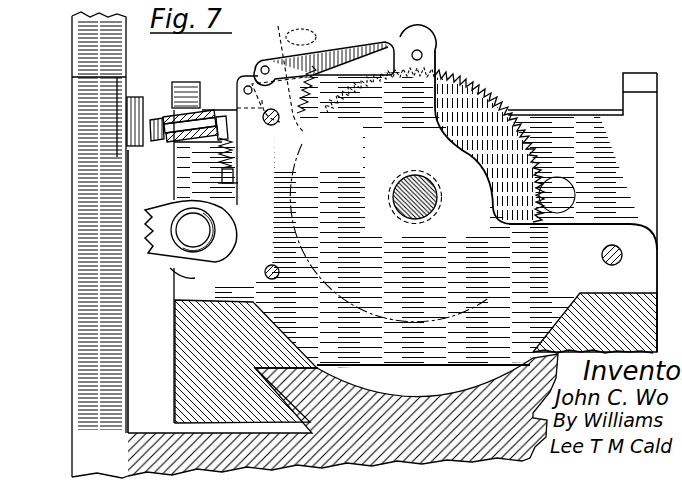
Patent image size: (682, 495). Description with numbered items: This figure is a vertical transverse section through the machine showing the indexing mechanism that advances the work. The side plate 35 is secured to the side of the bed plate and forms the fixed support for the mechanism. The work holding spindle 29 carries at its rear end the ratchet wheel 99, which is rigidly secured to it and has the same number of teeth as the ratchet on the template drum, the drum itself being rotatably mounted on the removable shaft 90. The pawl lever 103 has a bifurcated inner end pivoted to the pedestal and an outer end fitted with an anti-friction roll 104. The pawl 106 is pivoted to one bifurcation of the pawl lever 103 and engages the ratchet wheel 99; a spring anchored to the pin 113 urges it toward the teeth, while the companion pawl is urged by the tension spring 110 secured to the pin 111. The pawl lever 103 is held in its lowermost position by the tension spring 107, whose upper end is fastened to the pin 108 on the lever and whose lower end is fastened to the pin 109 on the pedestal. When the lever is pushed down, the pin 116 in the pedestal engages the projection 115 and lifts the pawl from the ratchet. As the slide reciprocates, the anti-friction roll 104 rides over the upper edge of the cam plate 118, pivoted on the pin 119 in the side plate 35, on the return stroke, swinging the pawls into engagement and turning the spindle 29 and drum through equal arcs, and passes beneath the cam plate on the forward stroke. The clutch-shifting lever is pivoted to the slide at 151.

The side plate 35 is at (80, 116).
The anti-friction roll 104 is at (129, 146).
The ratchet wheel 99 is at (458, 91).
The pin 113 is at (404, 72).
The removable shaft 90 is at (433, 212).
The work holding spindle 29 is at (413, 170).
The pawl 106 is at (341, 53).
The pin 116 is at (249, 85).
The pin 111 is at (322, 134).
The projection 115 is at (276, 38).
The tension spring 110 is at (301, 60).
The cam plate 118 is at (152, 110).
The pawl lever 103 is at (187, 117).
The pin 108 is at (203, 124).
The pin 119 is at (131, 100).
The tension spring 107 is at (236, 153).
The pin 109 is at (237, 193).
The pivot 151 is at (212, 257).